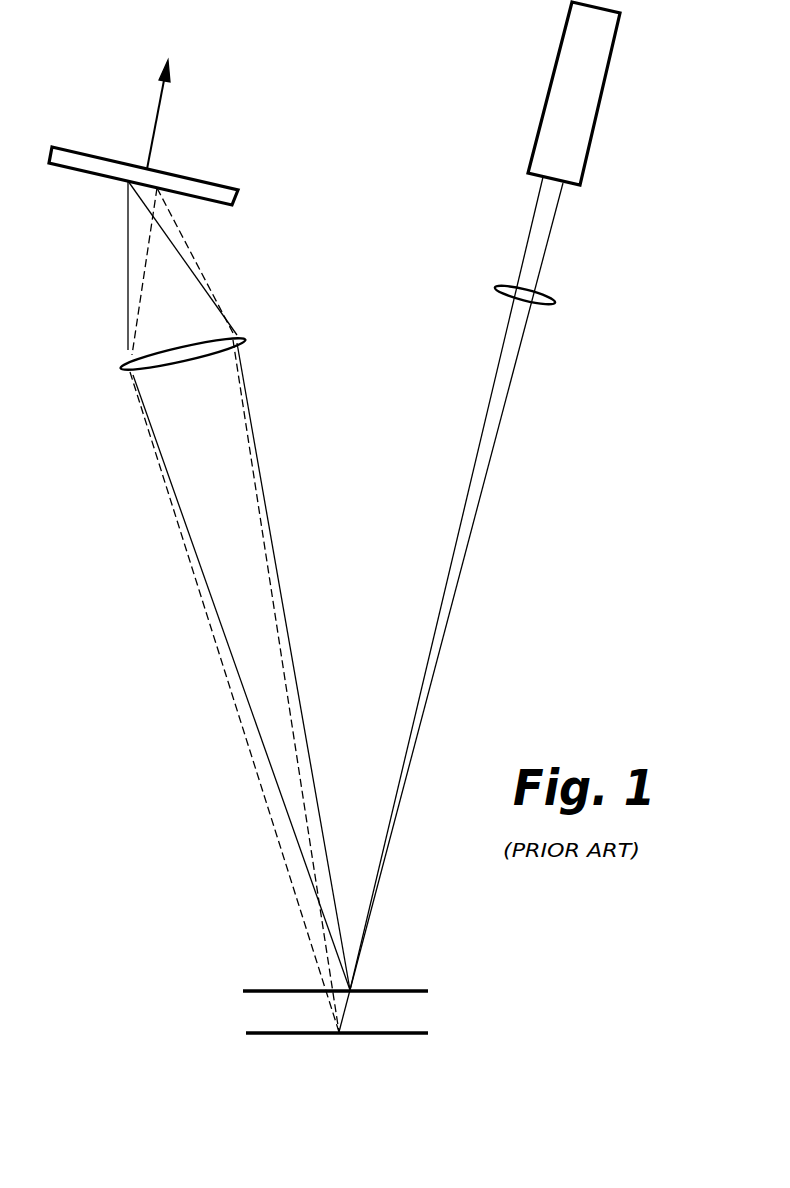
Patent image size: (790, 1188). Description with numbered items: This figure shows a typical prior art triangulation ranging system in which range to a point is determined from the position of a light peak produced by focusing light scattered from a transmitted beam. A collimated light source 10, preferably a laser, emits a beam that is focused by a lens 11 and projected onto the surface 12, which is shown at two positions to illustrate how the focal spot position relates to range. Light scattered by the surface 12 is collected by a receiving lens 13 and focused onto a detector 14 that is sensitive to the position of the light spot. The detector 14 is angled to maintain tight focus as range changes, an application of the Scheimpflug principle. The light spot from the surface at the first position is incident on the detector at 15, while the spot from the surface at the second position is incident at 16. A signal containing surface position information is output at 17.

The collimated light source 10 is at (597, 107).
The lens 11 is at (542, 293).
The surface 12 is at (279, 969).
The receiving lens 13 is at (205, 353).
The detector 14 is at (237, 198).
The light spot incidence point for surface position 1 15 is at (128, 183).
The light spot incidence point for surface position 2 16 is at (163, 190).
The signal output 17 is at (155, 120).